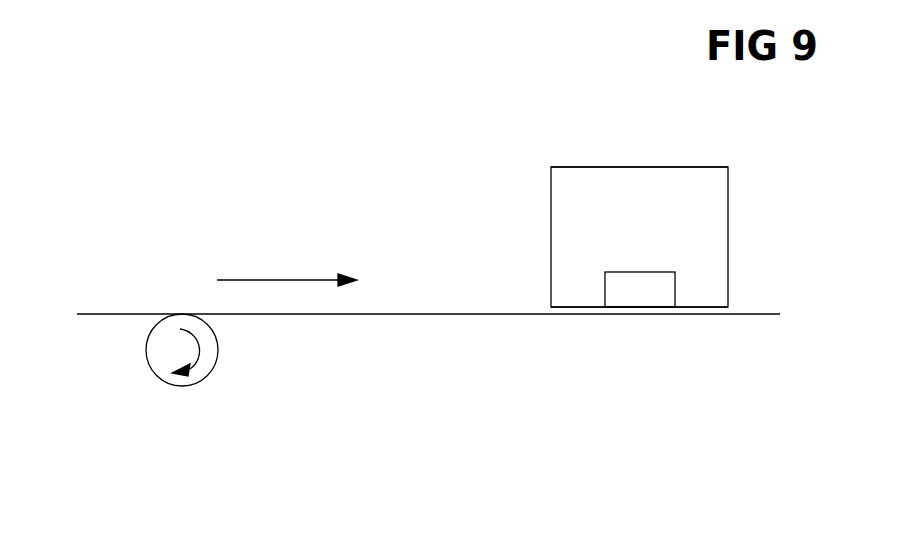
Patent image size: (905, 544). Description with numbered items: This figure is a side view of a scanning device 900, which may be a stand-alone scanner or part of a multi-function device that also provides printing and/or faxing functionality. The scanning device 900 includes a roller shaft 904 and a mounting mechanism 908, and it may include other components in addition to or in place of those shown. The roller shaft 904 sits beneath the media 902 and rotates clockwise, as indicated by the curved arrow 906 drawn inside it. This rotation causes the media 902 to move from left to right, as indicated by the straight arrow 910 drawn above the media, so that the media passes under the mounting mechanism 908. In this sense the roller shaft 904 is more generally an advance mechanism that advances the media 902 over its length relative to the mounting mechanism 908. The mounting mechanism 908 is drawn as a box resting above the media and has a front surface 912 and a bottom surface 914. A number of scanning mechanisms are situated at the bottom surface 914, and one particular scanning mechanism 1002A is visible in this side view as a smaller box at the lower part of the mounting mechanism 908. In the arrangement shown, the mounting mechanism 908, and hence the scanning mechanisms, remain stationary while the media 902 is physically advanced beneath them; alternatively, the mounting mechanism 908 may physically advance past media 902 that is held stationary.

The scanning device 900 is at (116, 198).
The media 902 is at (462, 314).
The roller shaft 904 is at (148, 352).
The arrow 906 is at (217, 345).
The mounting mechanism 908 is at (551, 209).
The arrow 910 is at (280, 280).
The front surface 912 is at (612, 186).
The bottom surface 914 is at (710, 314).
The scanning mechanism 1002A is at (605, 275).